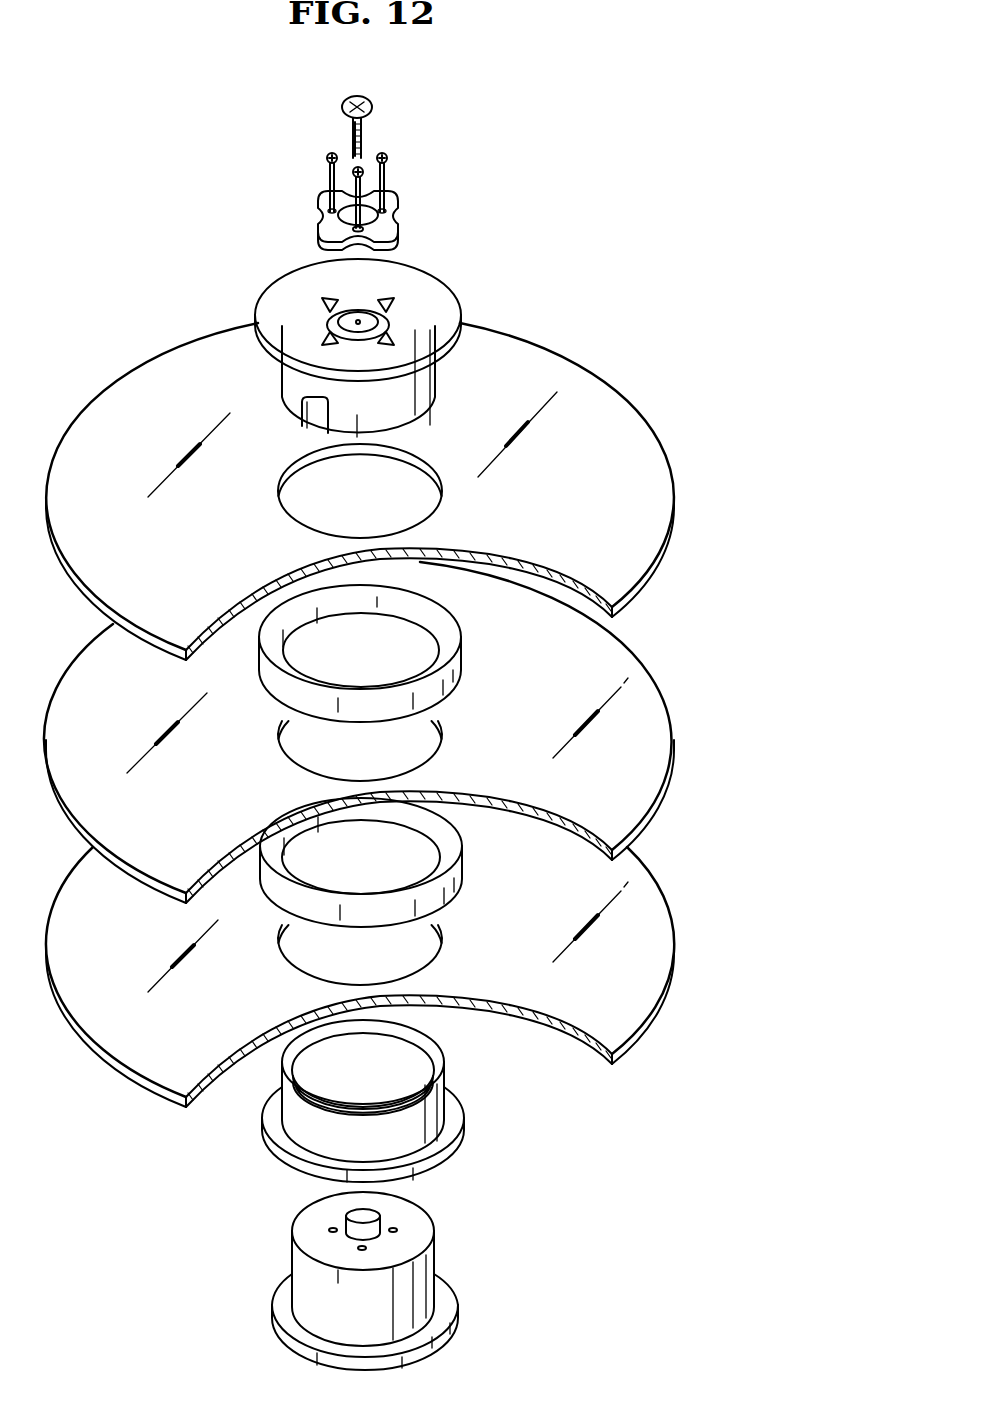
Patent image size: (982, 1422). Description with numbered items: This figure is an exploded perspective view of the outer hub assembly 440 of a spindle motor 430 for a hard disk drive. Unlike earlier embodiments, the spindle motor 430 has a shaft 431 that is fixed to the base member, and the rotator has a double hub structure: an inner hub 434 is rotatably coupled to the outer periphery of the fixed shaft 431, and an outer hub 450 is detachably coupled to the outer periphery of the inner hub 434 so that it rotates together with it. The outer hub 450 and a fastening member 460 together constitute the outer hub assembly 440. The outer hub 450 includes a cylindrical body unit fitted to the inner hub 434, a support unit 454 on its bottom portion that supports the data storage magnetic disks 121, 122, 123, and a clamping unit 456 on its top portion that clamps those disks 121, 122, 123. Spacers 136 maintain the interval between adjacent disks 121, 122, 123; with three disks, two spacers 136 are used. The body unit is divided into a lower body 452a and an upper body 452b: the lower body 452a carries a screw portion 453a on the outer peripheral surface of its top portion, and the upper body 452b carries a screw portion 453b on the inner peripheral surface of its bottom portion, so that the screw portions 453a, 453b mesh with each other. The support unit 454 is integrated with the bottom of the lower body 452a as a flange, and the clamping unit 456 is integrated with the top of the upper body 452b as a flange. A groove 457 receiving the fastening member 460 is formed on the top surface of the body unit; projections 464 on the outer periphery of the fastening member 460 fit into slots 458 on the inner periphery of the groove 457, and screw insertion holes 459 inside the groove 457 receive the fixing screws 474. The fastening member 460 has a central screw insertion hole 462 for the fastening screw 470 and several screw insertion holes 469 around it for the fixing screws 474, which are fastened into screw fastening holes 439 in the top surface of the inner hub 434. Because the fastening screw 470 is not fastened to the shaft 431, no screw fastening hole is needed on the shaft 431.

The data storage magnetic disk 121 is at (672, 906).
The data storage magnetic disk 122 is at (652, 690).
The data storage magnetic disk 123 is at (617, 394).
The spacer 136 is at (455, 684).
The spindle motor 430 is at (405, 1281).
The shaft 431 is at (304, 1243).
The inner hub 434 is at (490, 1254).
The screw fastening hole 439 is at (408, 1227).
The outer hub assembly 440 is at (518, 235).
The outer hub 450 is at (369, 352).
The lower body 452a is at (304, 1104).
The upper body 452b is at (412, 412).
The screw portion 453a is at (302, 1098).
The screw portion 453b is at (300, 428).
The support unit 454 is at (292, 1166).
The clamping unit 456 is at (460, 318).
The groove 457 is at (336, 300).
The slot 458 is at (400, 303).
The screw insertion hole 459 is at (418, 318).
The fastening member 460 is at (354, 201).
The central screw insertion hole 462 is at (322, 204).
The projection 464 is at (393, 196).
The screw insertion hole 469 is at (396, 210).
The fastening screw 470 is at (376, 108).
The fixing screw 474 is at (386, 157).